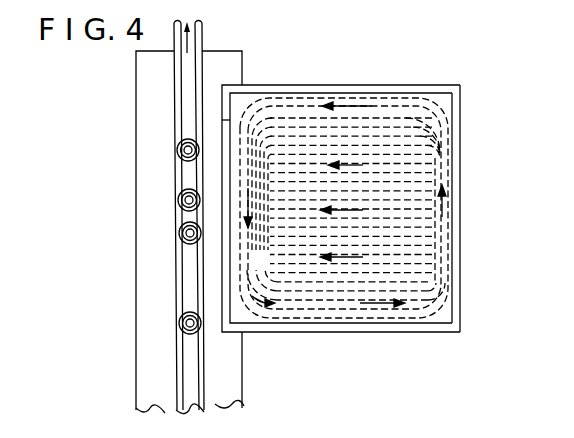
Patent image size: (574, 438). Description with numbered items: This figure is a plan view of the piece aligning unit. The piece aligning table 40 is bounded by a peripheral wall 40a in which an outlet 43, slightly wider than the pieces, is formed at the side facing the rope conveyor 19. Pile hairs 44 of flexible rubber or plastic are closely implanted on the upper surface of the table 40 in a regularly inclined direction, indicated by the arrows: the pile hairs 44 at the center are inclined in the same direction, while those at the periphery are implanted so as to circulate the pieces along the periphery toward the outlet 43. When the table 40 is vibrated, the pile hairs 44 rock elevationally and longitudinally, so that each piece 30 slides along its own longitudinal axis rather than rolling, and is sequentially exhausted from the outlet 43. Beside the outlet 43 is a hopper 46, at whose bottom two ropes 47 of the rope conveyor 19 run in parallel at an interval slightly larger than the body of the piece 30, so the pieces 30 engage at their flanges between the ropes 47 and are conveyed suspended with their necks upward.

The rope conveyor 19 is at (172, 266).
The piece 30 is at (179, 326).
The piece aligning table 40 is at (420, 83).
The peripheral wall 40a is at (460, 134).
The outlet 43 is at (221, 100).
The pile hairs 44 is at (342, 104).
The hopper 46 is at (140, 88).
The ropes 47 is at (177, 374).